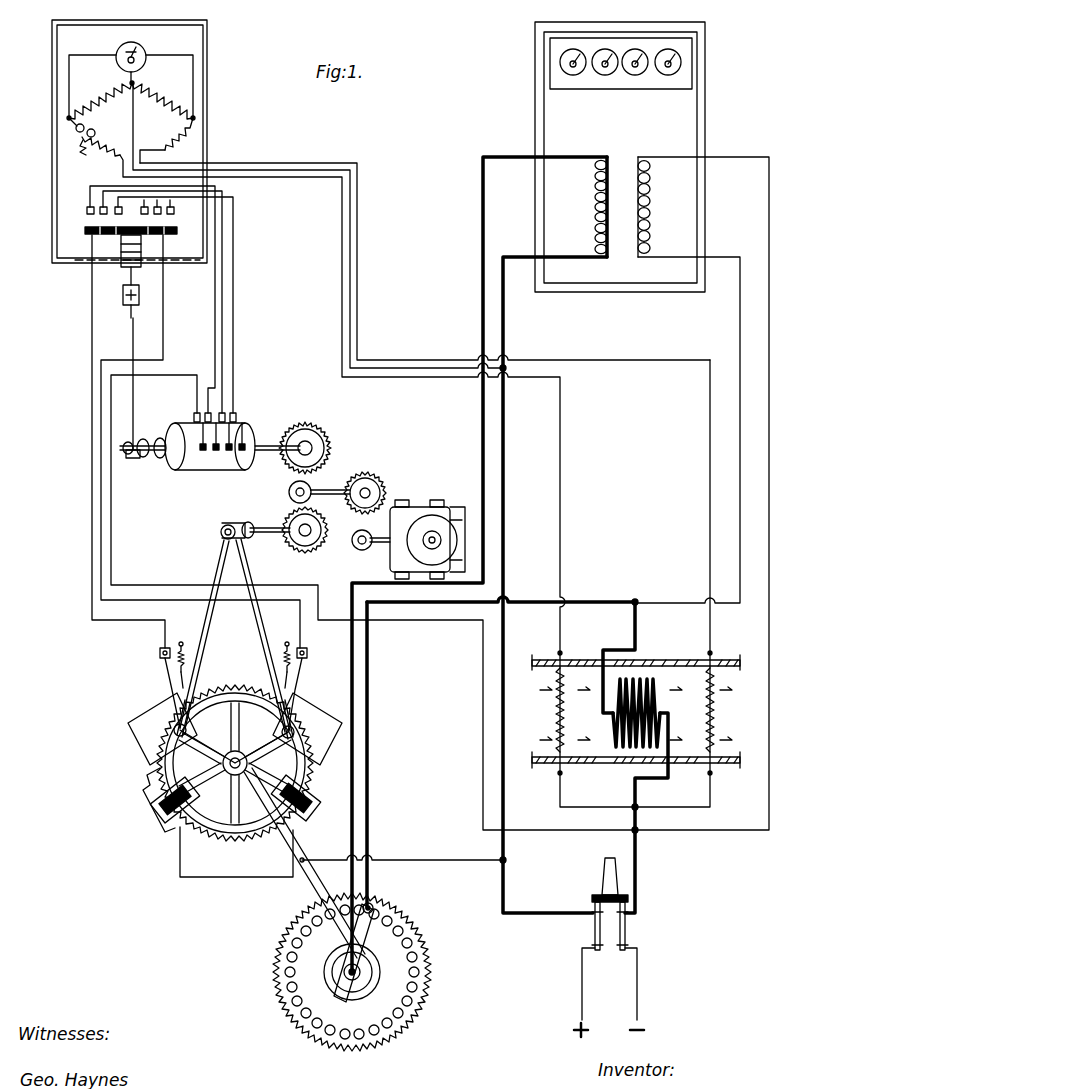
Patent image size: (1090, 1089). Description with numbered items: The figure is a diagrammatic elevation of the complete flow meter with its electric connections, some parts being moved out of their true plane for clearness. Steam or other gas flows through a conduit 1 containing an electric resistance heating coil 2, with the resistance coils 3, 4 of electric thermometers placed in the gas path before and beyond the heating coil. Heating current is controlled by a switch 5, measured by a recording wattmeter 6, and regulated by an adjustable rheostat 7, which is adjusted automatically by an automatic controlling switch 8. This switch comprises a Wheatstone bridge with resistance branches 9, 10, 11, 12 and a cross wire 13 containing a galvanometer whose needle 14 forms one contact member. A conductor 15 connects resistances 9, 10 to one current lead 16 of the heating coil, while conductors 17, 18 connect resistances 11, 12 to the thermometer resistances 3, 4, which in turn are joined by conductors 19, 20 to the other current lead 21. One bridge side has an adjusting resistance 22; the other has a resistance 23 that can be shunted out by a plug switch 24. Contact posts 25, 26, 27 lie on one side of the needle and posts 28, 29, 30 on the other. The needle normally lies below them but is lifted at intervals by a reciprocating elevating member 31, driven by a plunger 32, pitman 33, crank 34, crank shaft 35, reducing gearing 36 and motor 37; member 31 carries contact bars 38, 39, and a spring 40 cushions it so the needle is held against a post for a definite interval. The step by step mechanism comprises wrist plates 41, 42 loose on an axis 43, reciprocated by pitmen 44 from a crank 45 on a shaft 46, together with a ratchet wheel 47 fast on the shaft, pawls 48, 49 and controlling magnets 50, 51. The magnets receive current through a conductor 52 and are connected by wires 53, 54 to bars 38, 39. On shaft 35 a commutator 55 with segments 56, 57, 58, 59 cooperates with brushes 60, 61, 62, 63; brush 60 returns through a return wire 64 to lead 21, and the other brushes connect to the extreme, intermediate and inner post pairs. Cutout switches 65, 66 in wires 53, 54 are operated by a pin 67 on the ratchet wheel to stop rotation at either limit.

The conduit 1 is at (678, 660).
The electric resistance heating coil 2 is at (618, 730).
The thermometer resistance coil 3 is at (553, 722).
The thermometer resistance coil 4 is at (713, 735).
The switch 5 is at (628, 932).
The recording wattmeter 6 is at (440, 426).
The adjustable rheostat 7 is at (430, 958).
The automatic controlling switch 8 is at (208, 80).
The resistance branch 9 is at (100, 101).
The resistance branch 10 is at (162, 101).
The resistance branch 11 is at (102, 140).
The resistance branch 12 is at (168, 134).
The cross wire 13 is at (84, 57).
The galvanometer needle 14 is at (142, 50).
The conductor 15 is at (250, 170).
The current lead 16 is at (505, 334).
The conductor 17 is at (342, 207).
The conductor 18 is at (357, 207).
The conductor 19 is at (598, 808).
The conductor 20 is at (678, 807).
The current lead 21 is at (638, 600).
The adjusting resistance 22 is at (186, 136).
The resistance 23 is at (80, 150).
The plug switch 24 is at (74, 122).
The contact post 25 is at (86, 210).
The contact post 26 is at (113, 215).
The contact post 27 is at (120, 225).
The contact post 28 is at (140, 215).
The contact post 29 is at (150, 215).
The contact post 30 is at (172, 212).
The reciprocating elevating member 31 is at (100, 268).
The plunger 32 is at (137, 275).
The pitman 33 is at (134, 392).
The crank 34 is at (143, 460).
The crank shaft 35 is at (165, 462).
The reducing gearing 36 is at (365, 470).
The motor 37 is at (408, 528).
The contact bar 38 is at (95, 236).
The contact bar 39 is at (165, 236).
The spring 40 is at (121, 260).
The wrist plate 41 is at (208, 822).
The wrist plate 42 is at (300, 700).
The axis 43 is at (282, 850).
The pitmen 44 is at (258, 624).
The crank 45 is at (221, 528).
The shaft 46 is at (290, 531).
The ratchet wheel 47 is at (160, 750).
The pawl 48 is at (160, 792).
The pawl 49 is at (314, 800).
The magnet 50 is at (164, 830).
The magnet 51 is at (315, 772).
The conductor 52 is at (410, 858).
The wire 53 is at (100, 620).
The wire 54 is at (140, 598).
The commutator 55 is at (260, 420).
The contact segment 56 is at (203, 452).
The contact segment 57 is at (216, 452).
The contact segment 58 is at (229, 452).
The contact segment 59 is at (243, 452).
The brush 60 is at (193, 416).
The brush 61 is at (210, 412).
The brush 62 is at (223, 412).
The brush 63 is at (235, 412).
The return wire 64 is at (111, 432).
The cutout switch 65 is at (200, 672).
The cutout switch 66 is at (276, 670).
The pin 67 is at (262, 704).